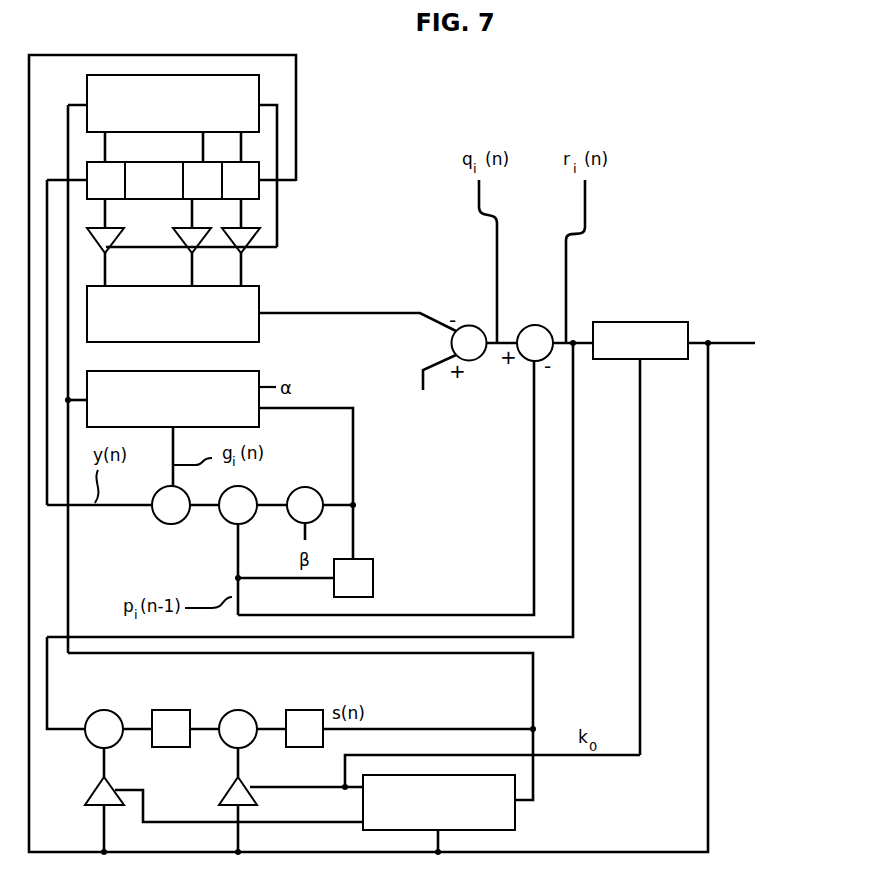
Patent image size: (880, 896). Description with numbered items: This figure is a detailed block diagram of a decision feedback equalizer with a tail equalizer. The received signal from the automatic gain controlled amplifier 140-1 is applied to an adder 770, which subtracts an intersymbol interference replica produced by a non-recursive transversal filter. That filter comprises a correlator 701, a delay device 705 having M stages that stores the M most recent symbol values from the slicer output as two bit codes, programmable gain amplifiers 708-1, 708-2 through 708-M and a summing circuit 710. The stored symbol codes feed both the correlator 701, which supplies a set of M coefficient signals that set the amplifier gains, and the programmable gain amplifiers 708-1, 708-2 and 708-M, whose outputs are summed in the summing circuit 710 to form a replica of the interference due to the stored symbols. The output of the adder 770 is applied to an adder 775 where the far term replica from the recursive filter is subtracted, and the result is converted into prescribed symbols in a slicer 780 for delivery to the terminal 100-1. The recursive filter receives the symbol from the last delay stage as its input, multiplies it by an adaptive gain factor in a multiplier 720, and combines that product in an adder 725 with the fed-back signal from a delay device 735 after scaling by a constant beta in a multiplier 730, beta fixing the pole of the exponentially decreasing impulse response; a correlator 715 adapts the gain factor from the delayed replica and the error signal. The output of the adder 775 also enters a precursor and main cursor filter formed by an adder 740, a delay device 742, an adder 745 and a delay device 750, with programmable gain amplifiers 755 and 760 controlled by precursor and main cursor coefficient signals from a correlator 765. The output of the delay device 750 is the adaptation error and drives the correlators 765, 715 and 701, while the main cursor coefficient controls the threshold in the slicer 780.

The correlator 701 is at (173, 103).
The delay device 705 is at (173, 180).
The programmable gain amplifier 708-1 is at (241, 277).
The programmable gain amplifier 708-2 is at (192, 267).
The programmable gain amplifier 708-M is at (128, 255).
The summing circuit 710 is at (173, 314).
The correlator 715 is at (173, 399).
The multiplier 720 is at (153, 515).
The adder 725 is at (220, 517).
The multiplier 730 is at (315, 488).
The delay device 735 is at (334, 592).
The adder 740 is at (112, 710).
The delay device 742 is at (176, 710).
The adder 745 is at (245, 710).
The delay device 750 is at (312, 710).
The programmable gain amplifier 755 is at (97, 793).
The programmable gain amplifier 760 is at (226, 786).
The correlator 765 is at (515, 811).
The adder 770 is at (469, 325).
The adder 775 is at (535, 325).
The slicer 780 is at (640, 322).
The automatic gain controlled amplifier 140-1 is at (425, 431).
The terminal 100-1 is at (727, 343).